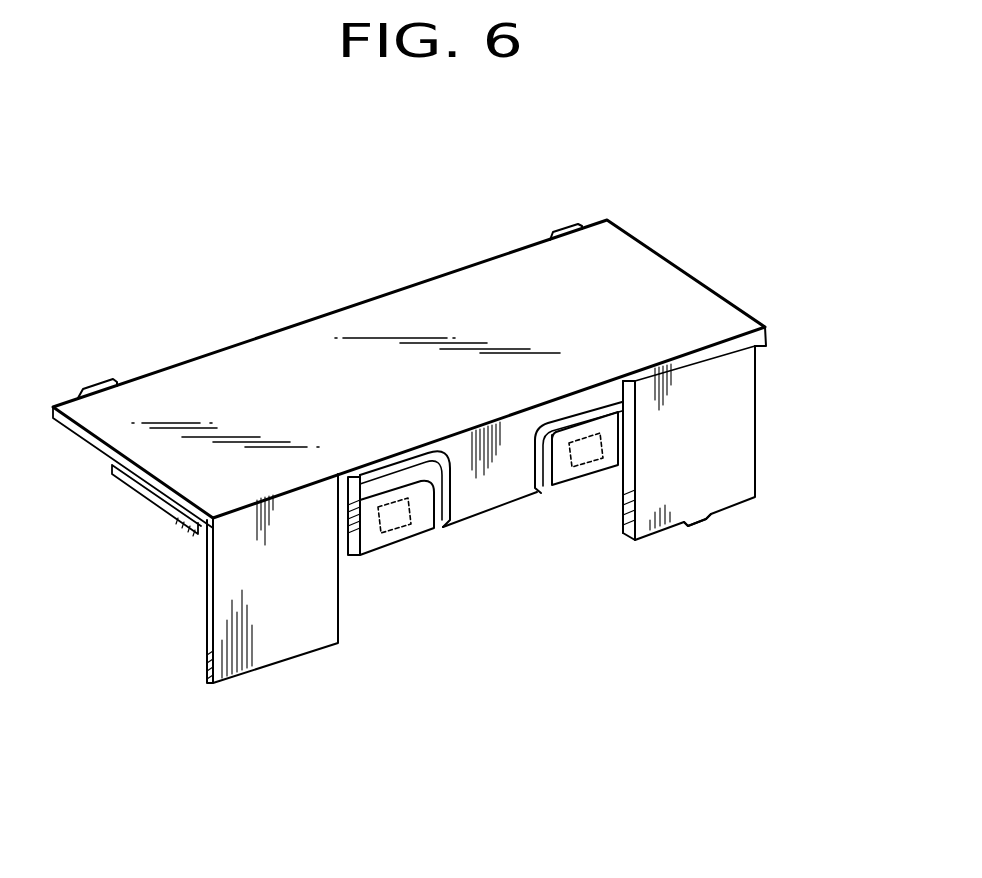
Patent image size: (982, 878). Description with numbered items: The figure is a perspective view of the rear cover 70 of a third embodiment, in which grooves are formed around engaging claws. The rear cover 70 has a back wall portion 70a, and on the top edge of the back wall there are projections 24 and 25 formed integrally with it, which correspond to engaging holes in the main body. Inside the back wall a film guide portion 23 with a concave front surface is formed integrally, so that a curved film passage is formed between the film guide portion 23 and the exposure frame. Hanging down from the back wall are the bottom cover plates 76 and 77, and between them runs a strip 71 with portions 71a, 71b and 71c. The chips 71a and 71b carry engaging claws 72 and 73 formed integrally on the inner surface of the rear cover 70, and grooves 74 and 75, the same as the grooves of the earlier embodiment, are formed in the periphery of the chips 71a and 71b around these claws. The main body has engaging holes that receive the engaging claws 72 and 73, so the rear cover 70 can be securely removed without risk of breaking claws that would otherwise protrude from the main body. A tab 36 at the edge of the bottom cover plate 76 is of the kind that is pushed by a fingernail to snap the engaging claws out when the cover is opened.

The rear cover 70 is at (287, 318).
The back wall portion 70a is at (662, 275).
The projection 24 is at (565, 221).
The projection 25 is at (100, 381).
The film guide portion 23 is at (153, 500).
The bottom cover plate 77 is at (292, 636).
The bottom cover plate 76 is at (737, 419).
The tab 36 is at (706, 521).
The front strip 71 is at (483, 517).
The chip 71a is at (343, 546).
The chip 71b is at (615, 453).
The middle portion of front strip 71c is at (468, 528).
The groove 74 is at (399, 527).
The groove 75 is at (587, 459).
The engaging claw 72 is at (379, 534).
The engaging claw 73 is at (573, 465).